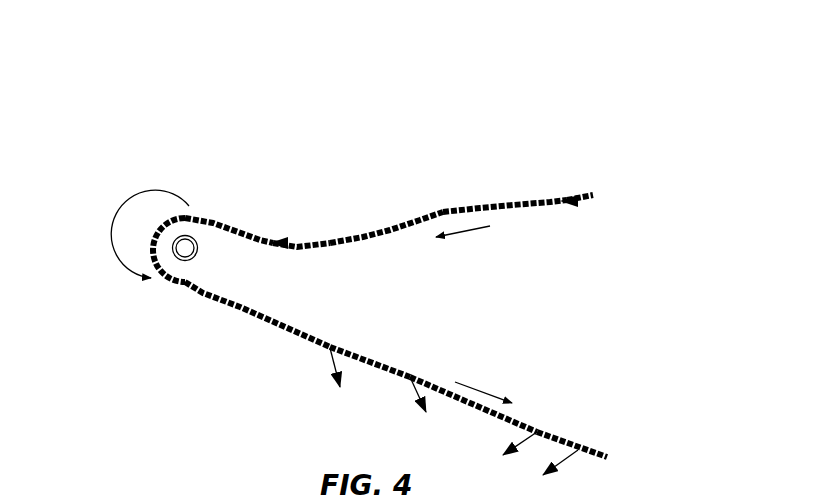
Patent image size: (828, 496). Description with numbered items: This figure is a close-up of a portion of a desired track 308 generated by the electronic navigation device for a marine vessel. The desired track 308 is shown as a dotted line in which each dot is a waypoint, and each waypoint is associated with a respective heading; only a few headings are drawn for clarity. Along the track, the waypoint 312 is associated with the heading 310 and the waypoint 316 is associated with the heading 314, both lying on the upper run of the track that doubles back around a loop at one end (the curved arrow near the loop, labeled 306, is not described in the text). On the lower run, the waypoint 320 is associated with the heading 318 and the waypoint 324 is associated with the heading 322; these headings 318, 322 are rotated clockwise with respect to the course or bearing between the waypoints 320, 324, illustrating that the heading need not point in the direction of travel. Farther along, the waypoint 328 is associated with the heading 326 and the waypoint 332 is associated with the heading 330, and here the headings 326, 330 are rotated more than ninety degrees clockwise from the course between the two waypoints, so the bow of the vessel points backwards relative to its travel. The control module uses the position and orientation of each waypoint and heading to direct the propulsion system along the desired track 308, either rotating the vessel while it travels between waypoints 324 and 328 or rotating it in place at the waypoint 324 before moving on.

The pivot 306 is at (186, 262).
The desired track 308 is at (447, 205).
The heading 310 is at (570, 195).
The waypoint 312 is at (596, 198).
The heading 314 is at (288, 242).
The waypoint 316 is at (292, 248).
The heading 318 is at (328, 360).
The waypoint 320 is at (330, 346).
The heading 322 is at (410, 388).
The waypoint 324 is at (412, 376).
The heading 326 is at (528, 438).
The waypoint 328 is at (538, 430).
The heading 330 is at (572, 460).
The waypoint 332 is at (580, 449).